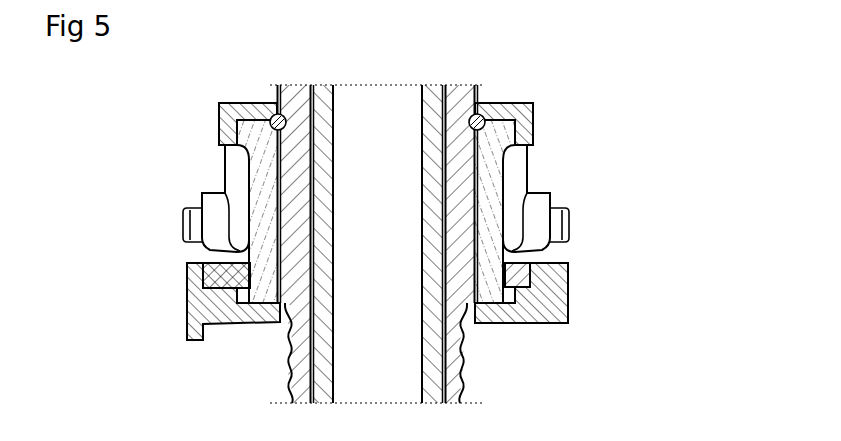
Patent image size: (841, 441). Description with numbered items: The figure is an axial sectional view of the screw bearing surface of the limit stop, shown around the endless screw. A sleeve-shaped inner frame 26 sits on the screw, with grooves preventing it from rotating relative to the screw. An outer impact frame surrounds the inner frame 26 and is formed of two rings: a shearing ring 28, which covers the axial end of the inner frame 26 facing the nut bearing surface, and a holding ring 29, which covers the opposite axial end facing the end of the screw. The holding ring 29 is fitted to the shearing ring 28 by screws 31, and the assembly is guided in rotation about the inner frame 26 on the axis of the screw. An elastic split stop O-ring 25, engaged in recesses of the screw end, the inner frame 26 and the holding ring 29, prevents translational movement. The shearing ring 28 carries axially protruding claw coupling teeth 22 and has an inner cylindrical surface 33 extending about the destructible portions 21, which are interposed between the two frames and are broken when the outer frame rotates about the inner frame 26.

The destructible portions 21 is at (207, 248).
The claw coupling teeth 22 is at (190, 333).
The elastic split stop O-ring 25 is at (270, 114).
The inner frame 26 is at (496, 207).
The shearing ring 28 is at (565, 316).
The holding ring 29 is at (486, 116).
The screws 31 is at (186, 212).
The inner cylindrical surface 33 is at (206, 275).